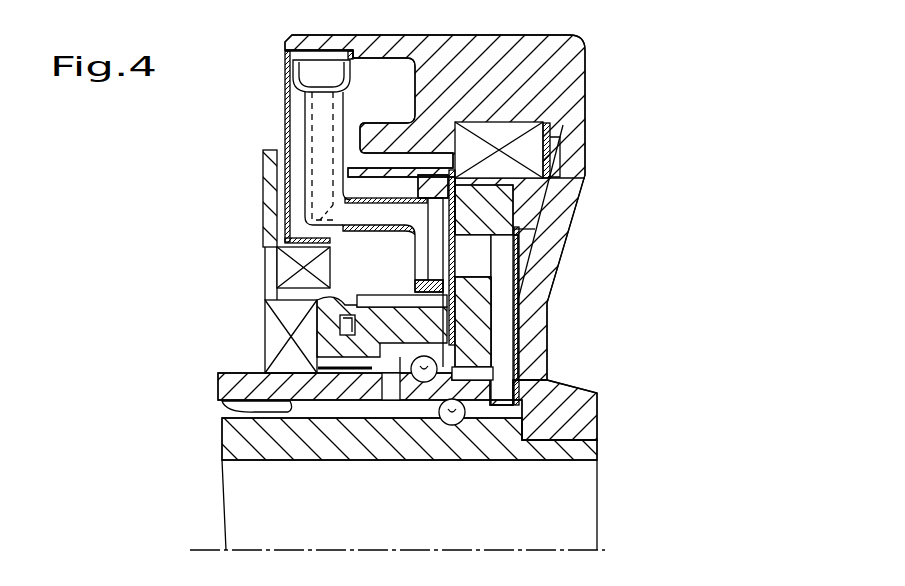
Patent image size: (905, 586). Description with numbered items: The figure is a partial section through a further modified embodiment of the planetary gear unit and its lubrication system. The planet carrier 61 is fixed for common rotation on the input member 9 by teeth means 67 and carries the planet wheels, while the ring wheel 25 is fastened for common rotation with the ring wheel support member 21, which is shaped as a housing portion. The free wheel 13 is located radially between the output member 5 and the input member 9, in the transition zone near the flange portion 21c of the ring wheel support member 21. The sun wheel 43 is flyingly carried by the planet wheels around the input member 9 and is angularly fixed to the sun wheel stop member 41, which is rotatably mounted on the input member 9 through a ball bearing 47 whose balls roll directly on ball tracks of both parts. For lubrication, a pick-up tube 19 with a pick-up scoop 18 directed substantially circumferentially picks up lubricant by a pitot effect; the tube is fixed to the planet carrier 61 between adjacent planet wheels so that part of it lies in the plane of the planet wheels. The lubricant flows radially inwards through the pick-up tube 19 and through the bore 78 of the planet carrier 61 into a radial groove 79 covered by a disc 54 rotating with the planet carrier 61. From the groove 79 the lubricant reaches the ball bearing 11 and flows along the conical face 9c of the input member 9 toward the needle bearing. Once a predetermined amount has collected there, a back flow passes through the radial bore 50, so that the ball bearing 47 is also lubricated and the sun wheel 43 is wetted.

The output member 5 is at (248, 447).
The input member 9 is at (228, 382).
The conical face 9c is at (228, 406).
The ball bearing 11 is at (458, 418).
The free wheel 13 is at (515, 127).
The pick-up scoop 18 is at (310, 70).
The pick-up tube 19 is at (318, 108).
The ring wheel support member 21 is at (572, 61).
The flange portion 21c is at (572, 177).
The ring wheel 25 is at (320, 178).
The sun wheel stop member 41 is at (265, 210).
The sun wheel 43 is at (338, 332).
The ball bearing 47 is at (428, 375).
The radial bore 50 is at (392, 400).
The disc 54 is at (517, 230).
The planet carrier 61 is at (482, 343).
The teeth means 67 is at (487, 373).
The bore 78 is at (480, 262).
The radial groove 79 is at (507, 298).